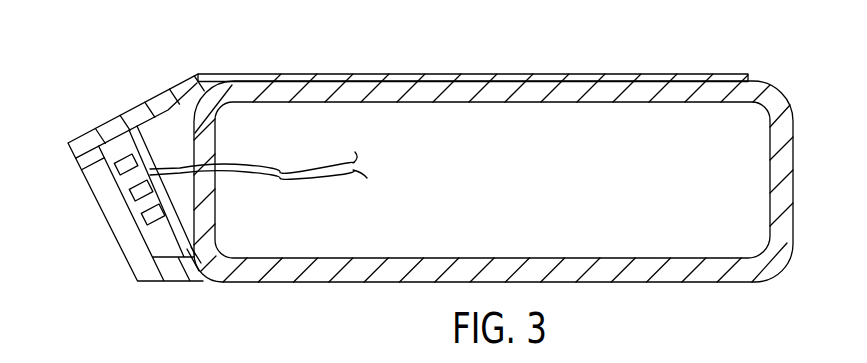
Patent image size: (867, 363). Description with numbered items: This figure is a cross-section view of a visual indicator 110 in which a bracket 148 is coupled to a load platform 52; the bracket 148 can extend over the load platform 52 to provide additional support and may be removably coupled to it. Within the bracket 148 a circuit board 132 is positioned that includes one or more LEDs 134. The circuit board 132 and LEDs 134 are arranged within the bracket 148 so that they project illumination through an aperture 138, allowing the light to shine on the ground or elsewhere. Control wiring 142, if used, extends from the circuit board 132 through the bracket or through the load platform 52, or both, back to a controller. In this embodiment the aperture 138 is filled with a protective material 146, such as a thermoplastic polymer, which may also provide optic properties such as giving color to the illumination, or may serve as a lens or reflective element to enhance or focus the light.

The load platform 52 is at (783, 96).
The visual indicator 110 is at (124, 199).
The circuit board 132 is at (139, 147).
The LEDs 134 is at (122, 195).
The aperture 138 is at (125, 233).
The control wiring 142 is at (289, 178).
The protective material 146 is at (95, 180).
The bracket 148 is at (525, 73).